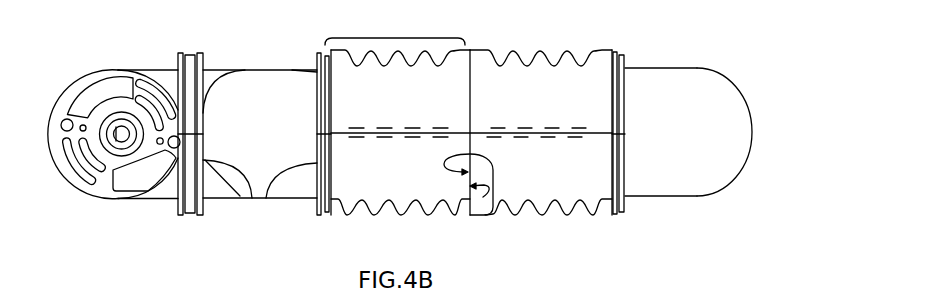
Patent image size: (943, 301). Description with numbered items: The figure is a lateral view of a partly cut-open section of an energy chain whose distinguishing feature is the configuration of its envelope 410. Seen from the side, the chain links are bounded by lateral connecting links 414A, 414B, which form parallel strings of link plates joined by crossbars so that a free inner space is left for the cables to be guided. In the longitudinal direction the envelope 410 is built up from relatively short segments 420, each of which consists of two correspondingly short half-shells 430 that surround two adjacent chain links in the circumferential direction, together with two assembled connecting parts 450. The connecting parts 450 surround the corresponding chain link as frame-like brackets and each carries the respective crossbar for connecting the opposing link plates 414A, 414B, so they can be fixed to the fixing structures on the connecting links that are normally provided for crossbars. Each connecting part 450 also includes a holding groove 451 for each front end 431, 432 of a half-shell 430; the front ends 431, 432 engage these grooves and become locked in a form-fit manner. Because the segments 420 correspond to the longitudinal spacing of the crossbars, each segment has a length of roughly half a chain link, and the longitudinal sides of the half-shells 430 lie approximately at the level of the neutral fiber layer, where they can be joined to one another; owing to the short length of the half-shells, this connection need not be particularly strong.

The envelope 410 is at (524, 44).
The lateral connecting link 414A is at (735, 112).
The lateral connecting link 414B is at (103, 95).
The segment 420 is at (395, 31).
The half-shell 430 is at (408, 108).
The front end 431 is at (483, 197).
The front end 432 is at (314, 196).
The connecting part 450 is at (292, 70).
The holding groove 451 is at (189, 51).